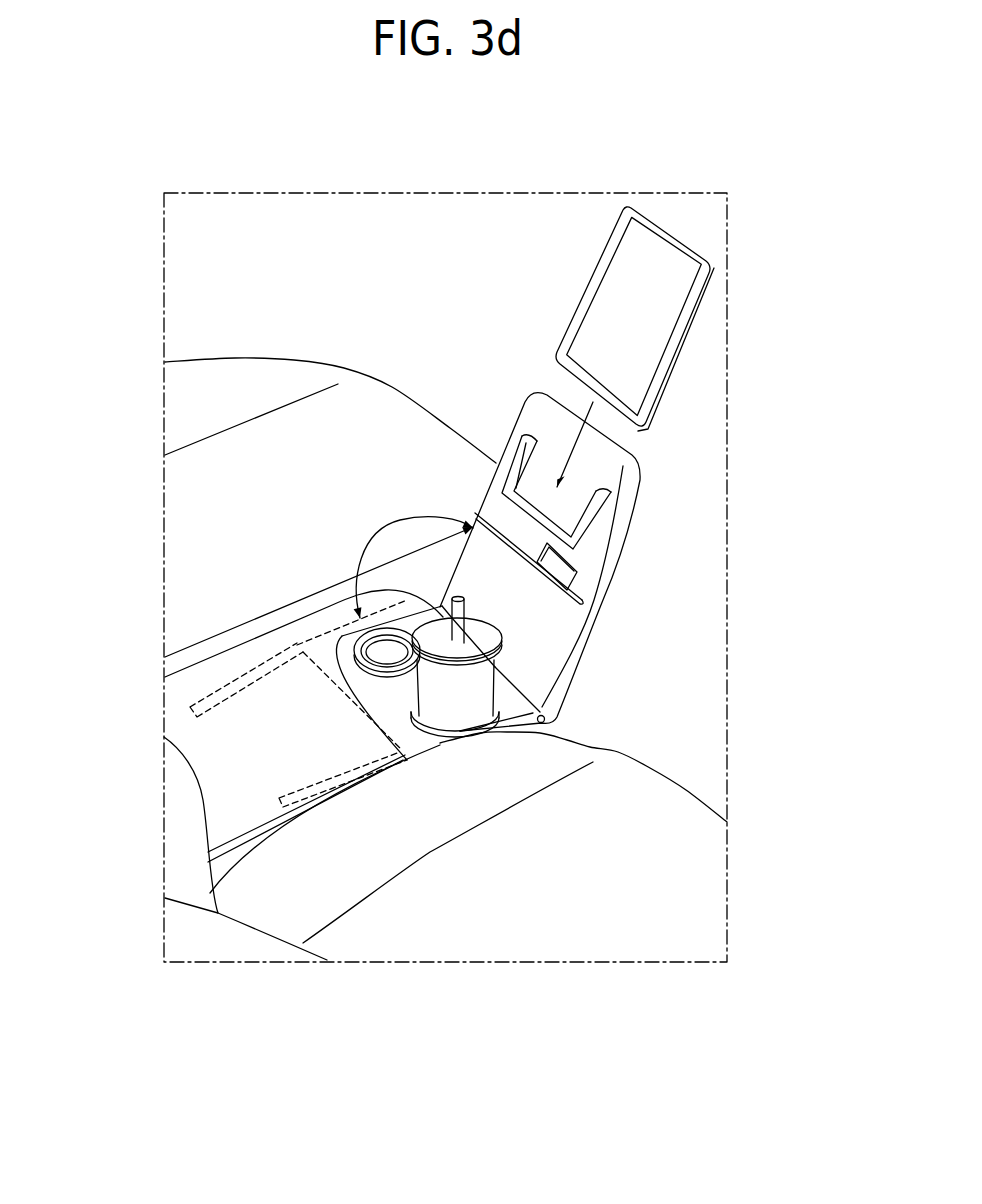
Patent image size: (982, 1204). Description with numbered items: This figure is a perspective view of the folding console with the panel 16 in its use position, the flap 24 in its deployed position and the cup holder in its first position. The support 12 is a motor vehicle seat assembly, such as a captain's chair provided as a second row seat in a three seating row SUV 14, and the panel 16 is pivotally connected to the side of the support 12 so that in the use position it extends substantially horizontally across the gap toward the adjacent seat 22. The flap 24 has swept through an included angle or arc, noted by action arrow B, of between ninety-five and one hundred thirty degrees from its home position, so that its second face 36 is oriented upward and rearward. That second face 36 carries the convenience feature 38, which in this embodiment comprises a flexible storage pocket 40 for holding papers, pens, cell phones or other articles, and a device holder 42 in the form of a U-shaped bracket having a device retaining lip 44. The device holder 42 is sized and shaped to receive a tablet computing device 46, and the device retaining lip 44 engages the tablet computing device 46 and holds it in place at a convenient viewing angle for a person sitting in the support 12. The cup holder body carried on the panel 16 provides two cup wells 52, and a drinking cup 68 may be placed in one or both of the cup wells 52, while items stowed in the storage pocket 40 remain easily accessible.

The support 12 is at (483, 930).
The three seating row SUV 14 is at (648, 165).
The panel 16 is at (210, 752).
The adjacent seat 22 is at (218, 512).
The flap 24 is at (632, 523).
The second face 36 is at (595, 563).
The convenience feature 38 is at (325, 555).
The flexible storage pocket 40 is at (542, 627).
The device holder 42 is at (514, 452).
The device retaining lip 44 is at (547, 520).
The tablet computing device 46 is at (692, 318).
The cup wells 52 is at (353, 641).
The drinking cup 68 is at (452, 695).
The action arrow B is at (370, 545).